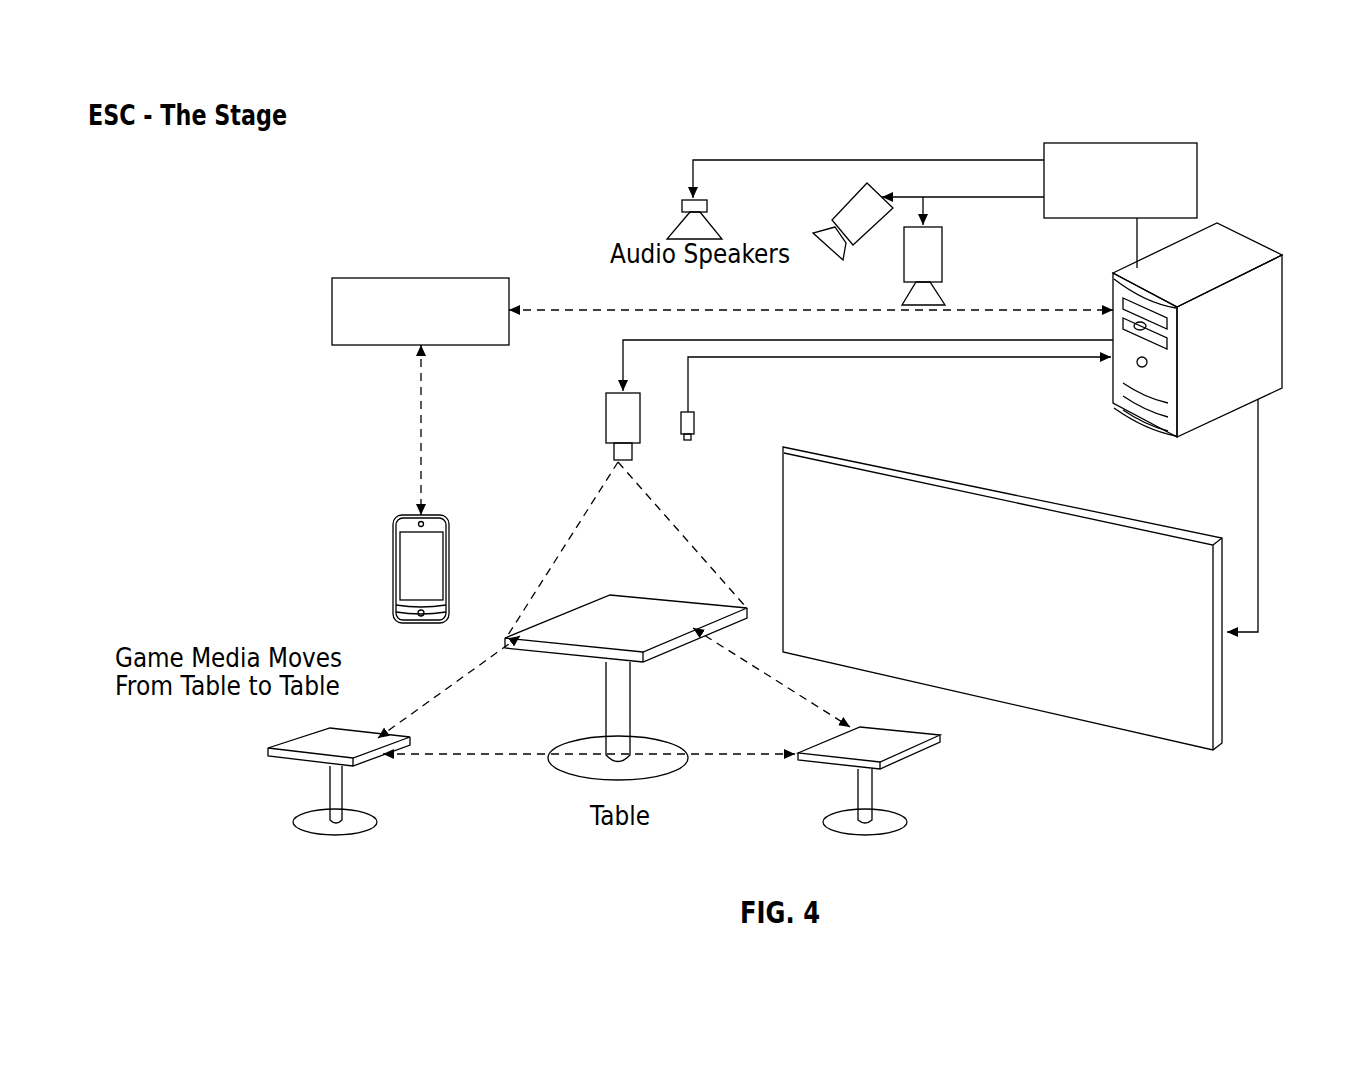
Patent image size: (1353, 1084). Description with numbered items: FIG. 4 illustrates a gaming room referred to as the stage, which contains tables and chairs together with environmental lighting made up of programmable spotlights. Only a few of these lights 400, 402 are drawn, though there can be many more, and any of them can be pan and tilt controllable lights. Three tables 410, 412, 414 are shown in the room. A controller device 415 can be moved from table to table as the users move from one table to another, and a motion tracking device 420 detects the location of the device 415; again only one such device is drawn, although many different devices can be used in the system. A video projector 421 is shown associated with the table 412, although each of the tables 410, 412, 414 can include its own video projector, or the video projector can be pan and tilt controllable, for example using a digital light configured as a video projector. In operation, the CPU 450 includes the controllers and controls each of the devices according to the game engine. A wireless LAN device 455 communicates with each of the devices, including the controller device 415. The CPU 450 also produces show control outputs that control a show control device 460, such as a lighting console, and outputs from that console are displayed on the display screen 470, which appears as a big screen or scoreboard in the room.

The light 400 is at (848, 205).
The light 402 is at (945, 258).
The table 410 is at (300, 762).
The table 412 is at (637, 597).
The table 414 is at (915, 755).
The controller device 415 is at (393, 568).
The motion tracking device 420 is at (695, 412).
The video projector 421 is at (620, 390).
The CPU 450 is at (1130, 425).
The wireless LAN device 455 is at (388, 278).
The show control device 460 is at (1155, 143).
The display screen 470 is at (1100, 512).